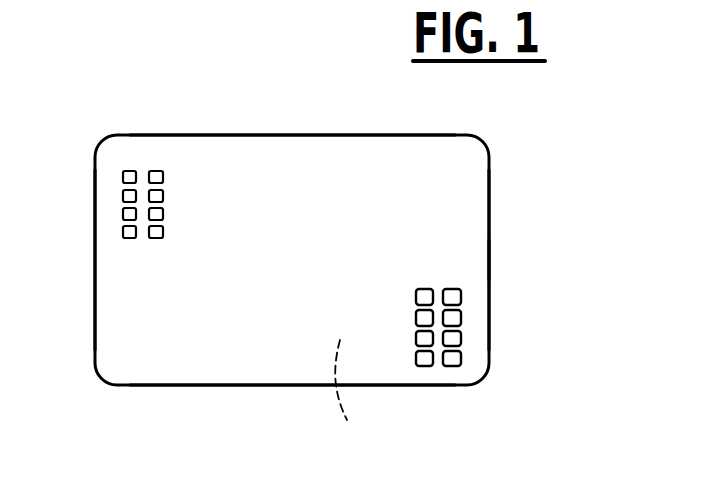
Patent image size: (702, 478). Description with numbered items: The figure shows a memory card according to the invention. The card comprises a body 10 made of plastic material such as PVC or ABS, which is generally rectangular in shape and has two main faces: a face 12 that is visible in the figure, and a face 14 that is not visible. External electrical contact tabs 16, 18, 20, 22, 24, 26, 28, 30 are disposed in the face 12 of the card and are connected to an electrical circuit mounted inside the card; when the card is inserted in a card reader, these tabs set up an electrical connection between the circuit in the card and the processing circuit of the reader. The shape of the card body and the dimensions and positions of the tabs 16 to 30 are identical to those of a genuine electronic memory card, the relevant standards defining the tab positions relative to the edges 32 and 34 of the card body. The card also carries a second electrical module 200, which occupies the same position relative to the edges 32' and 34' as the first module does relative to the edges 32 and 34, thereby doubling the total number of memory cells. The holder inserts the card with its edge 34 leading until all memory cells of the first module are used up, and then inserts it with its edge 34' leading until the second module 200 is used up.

The body 10 is at (490, 183).
The face 12 is at (428, 258).
The face 14 is at (353, 391).
The external electrical contact tab 16 is at (129, 170).
The external electrical contact tab 18 is at (123, 197).
The external electrical contact tab 20 is at (123, 215).
The external electrical contact tab 22 is at (123, 232).
The external electrical contact tab 24 is at (155, 170).
The external electrical contact tab 26 is at (163, 196).
The external electrical contact tab 28 is at (163, 214).
The external electrical contact tab 30 is at (163, 232).
The edge 32 is at (292, 106).
The edge 32' is at (292, 414).
The edge 34 is at (59, 261).
The edge 34' is at (523, 260).
The second electrical module 200 is at (464, 330).